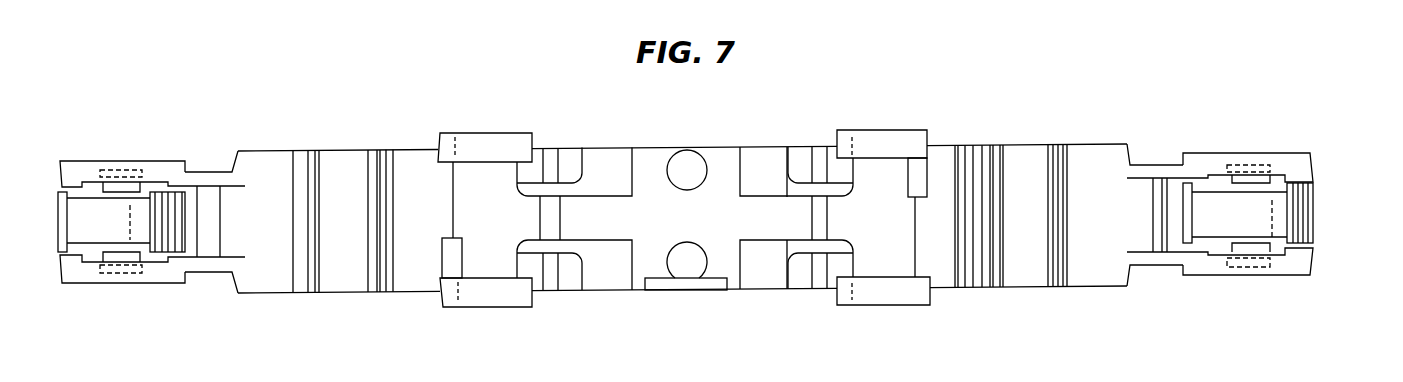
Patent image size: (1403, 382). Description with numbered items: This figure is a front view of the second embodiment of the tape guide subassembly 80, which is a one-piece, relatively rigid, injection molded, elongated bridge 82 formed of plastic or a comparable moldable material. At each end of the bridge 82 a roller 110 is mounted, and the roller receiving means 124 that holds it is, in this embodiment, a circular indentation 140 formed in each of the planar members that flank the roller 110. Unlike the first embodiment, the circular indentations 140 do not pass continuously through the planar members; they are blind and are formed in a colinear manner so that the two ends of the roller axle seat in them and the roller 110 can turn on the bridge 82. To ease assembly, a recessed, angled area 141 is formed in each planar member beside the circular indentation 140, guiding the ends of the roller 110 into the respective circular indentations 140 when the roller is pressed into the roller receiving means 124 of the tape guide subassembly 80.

The tape guide subassembly 80 is at (472, 99).
The bridge 82 is at (756, 160).
The roller 110 is at (77, 215).
The roller receiving means 124 is at (137, 158).
The circular indentation 140 is at (92, 162).
The recessed, angled area 141 is at (92, 261).